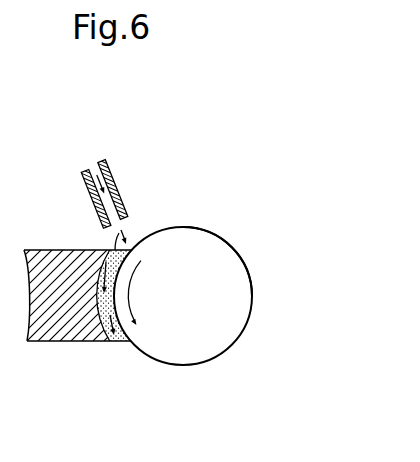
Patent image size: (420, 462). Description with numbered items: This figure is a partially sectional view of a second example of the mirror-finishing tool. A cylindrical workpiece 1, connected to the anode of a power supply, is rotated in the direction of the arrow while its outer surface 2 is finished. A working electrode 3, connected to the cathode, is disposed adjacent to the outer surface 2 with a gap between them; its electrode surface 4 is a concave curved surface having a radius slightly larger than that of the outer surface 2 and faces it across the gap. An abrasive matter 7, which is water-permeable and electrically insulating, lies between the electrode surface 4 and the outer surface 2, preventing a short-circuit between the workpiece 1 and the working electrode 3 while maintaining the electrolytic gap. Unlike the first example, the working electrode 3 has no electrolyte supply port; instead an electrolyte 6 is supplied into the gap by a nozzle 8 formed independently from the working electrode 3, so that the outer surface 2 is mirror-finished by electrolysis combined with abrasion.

The cylindrical workpiece 1 is at (210, 252).
The outer surface 2 is at (248, 270).
The working electrode 3 is at (45, 325).
The electrode surface 4 is at (80, 275).
The electrolyte 6 is at (87, 156).
The abrasive matter 7 is at (95, 320).
The nozzle 8 is at (110, 178).